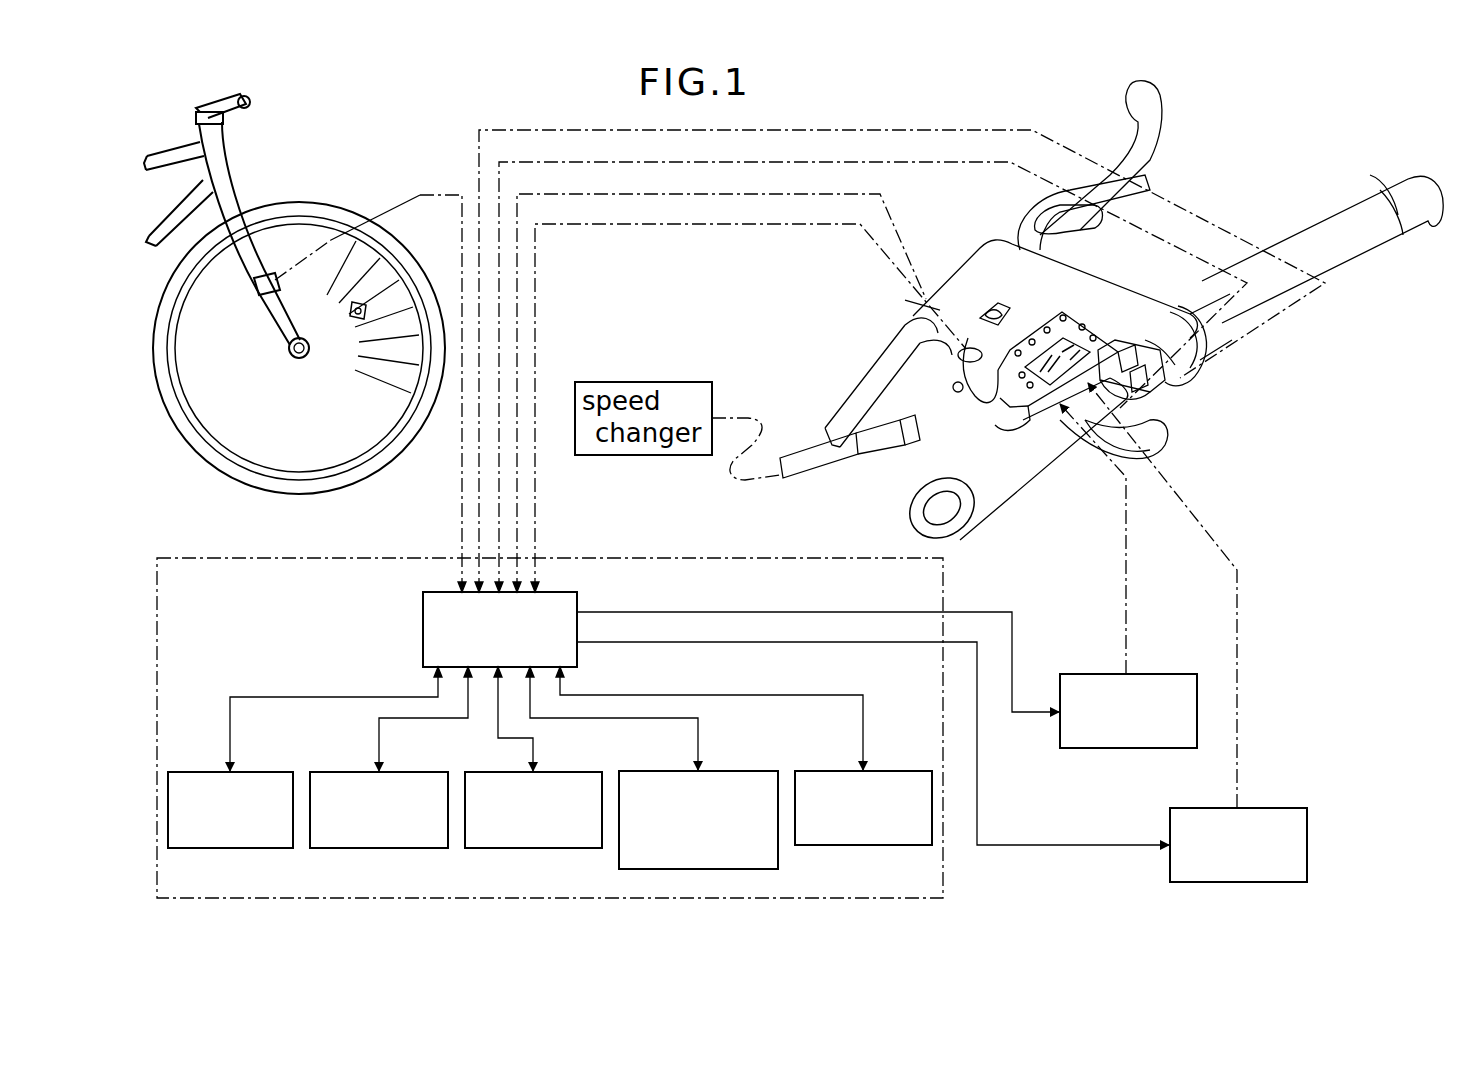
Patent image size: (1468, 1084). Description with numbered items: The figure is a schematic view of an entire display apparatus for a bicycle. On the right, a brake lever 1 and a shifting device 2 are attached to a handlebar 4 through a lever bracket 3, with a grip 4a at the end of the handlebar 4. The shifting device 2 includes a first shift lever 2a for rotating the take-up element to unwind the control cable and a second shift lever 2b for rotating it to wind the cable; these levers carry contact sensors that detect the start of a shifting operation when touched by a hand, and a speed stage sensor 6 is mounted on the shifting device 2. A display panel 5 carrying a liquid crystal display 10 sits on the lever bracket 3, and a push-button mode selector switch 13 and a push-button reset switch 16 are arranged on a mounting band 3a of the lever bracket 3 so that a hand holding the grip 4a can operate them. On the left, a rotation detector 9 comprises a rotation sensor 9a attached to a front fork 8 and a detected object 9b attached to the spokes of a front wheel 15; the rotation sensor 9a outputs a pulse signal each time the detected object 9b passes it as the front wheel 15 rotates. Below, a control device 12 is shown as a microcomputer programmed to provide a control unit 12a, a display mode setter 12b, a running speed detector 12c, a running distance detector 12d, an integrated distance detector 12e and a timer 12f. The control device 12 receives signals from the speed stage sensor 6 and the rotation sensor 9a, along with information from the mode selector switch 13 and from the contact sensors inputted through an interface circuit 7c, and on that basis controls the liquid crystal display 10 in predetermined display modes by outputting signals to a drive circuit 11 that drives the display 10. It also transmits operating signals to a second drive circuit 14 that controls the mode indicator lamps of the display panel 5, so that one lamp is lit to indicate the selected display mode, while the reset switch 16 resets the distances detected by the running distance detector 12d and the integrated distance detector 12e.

The brake lever 1 is at (1160, 115).
The shifting device 2 is at (885, 410).
The first shift lever 2a is at (1158, 438).
The second shift lever 2b is at (1110, 232).
The lever bracket 3 is at (980, 265).
The mounting band 3a is at (1180, 387).
The handlebar 4 is at (1027, 480).
The grip 4a is at (1317, 303).
The display panel 5 is at (1053, 312).
The speed stage sensor 6 is at (968, 350).
The interface circuit 7c is at (900, 289).
The front fork 8 is at (270, 312).
The rotation detector 9 is at (294, 251).
The rotation sensor 9a is at (273, 271).
The detected object 9b is at (357, 322).
The liquid crystal display 10 is at (1070, 320).
The drive circuit 11 is at (1090, 672).
The control device 12 is at (636, 556).
The control unit 12a is at (423, 616).
The display mode setter 12b is at (243, 849).
The running speed detector 12c is at (390, 849).
The running distance detector 12d is at (545, 849).
The integrated distance detector 12e is at (705, 870).
The timer 12f is at (868, 846).
The mode selector switch 13 is at (1165, 325).
The drive circuit 14 is at (1277, 806).
The front wheel 15 is at (191, 433).
The push-button switch 16 is at (1160, 407).